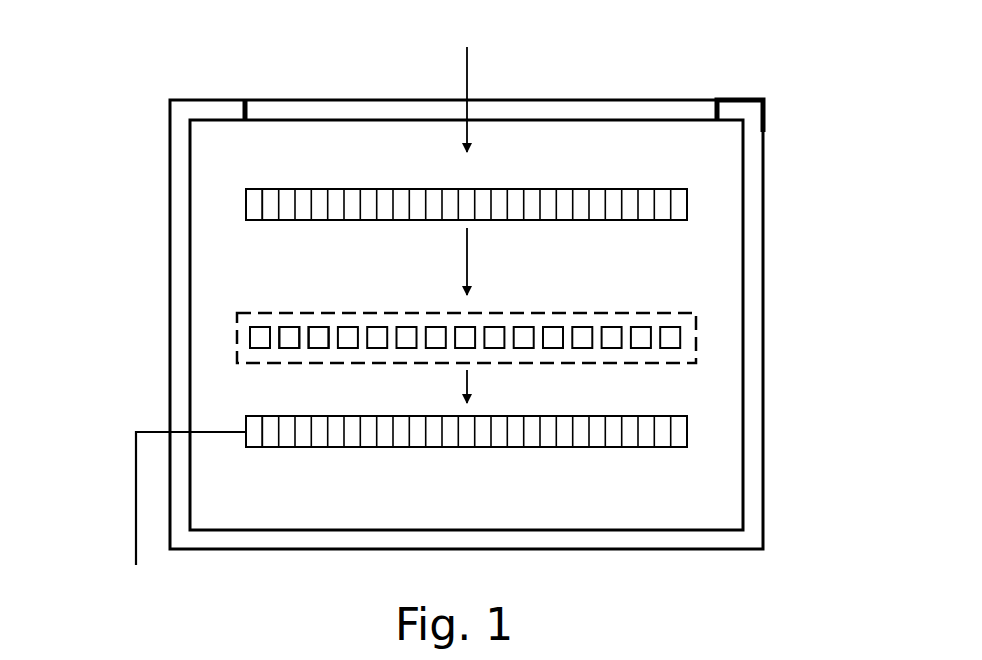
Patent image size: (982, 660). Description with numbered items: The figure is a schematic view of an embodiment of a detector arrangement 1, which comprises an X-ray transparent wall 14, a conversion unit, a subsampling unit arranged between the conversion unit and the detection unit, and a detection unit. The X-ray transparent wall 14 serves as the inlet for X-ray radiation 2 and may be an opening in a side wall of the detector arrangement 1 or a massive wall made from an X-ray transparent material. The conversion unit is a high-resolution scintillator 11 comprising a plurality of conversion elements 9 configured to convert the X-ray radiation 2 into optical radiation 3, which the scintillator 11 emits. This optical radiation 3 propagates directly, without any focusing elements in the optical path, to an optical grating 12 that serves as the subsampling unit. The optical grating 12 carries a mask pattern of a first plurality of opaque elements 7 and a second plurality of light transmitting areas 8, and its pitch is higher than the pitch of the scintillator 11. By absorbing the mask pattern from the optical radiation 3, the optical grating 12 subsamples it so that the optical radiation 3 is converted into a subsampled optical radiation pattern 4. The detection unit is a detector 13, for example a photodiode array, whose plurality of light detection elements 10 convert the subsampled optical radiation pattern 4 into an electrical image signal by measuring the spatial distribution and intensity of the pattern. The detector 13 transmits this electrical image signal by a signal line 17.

The detector arrangement 1 is at (763, 515).
The X-ray radiation 2 is at (467, 63).
The optical radiation 3 is at (470, 262).
The subsampled optical radiation pattern 4 is at (470, 373).
The opaque elements 7 is at (255, 330).
The light transmitting areas 8 is at (272, 340).
The conversion elements 9 is at (253, 200).
The light detection elements 10 is at (273, 442).
The scintillator 11 is at (688, 205).
The optical grating 12 is at (697, 337).
The detector 13 is at (688, 430).
The X-ray transparent wall 14 is at (687, 105).
The signal line 17 is at (136, 492).